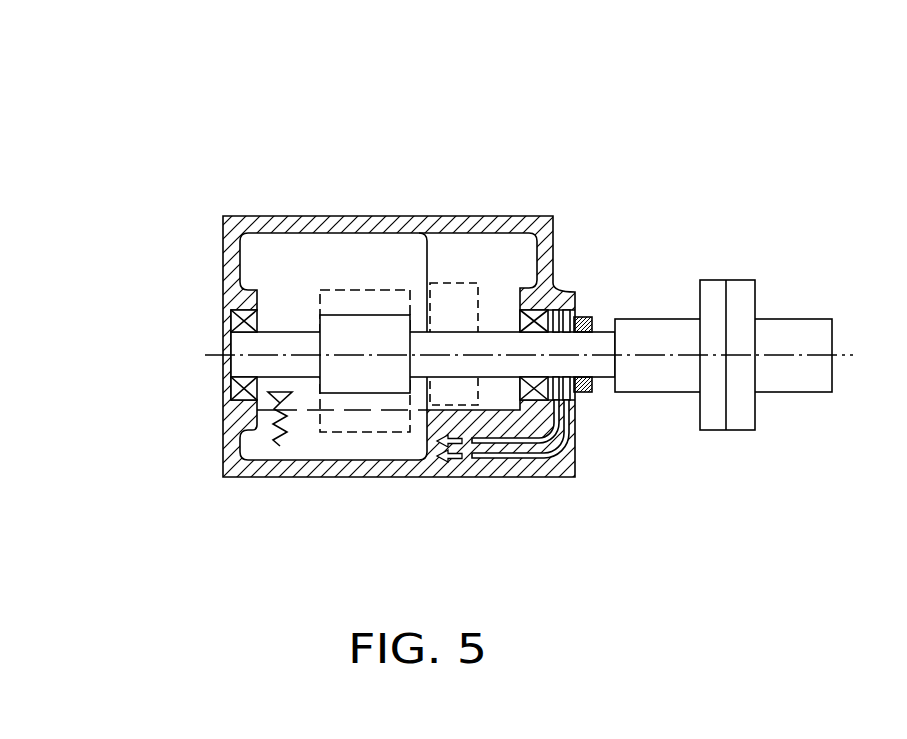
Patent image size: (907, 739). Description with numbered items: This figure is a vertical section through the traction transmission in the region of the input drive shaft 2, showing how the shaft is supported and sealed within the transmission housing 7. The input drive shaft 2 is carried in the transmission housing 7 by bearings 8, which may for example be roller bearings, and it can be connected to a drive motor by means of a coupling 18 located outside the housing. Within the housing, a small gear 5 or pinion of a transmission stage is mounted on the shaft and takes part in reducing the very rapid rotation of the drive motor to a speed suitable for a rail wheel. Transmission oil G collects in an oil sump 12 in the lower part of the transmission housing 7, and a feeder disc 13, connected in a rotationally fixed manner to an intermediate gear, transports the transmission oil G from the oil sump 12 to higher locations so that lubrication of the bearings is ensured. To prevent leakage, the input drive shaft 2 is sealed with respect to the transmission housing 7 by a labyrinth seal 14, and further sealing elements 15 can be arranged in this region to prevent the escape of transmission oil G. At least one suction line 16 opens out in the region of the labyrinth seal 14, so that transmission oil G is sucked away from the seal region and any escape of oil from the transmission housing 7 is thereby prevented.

The transmission housing 7 is at (223, 237).
The bearings 8 is at (245, 312).
The small gear 5 is at (366, 330).
The feeder disc 13 is at (460, 305).
The labyrinth seal 14 is at (578, 308).
The coupling 18 is at (770, 350).
The input drive shaft 2 is at (252, 364).
The transmission oil G is at (297, 437).
The oil sump 12 is at (336, 435).
The further sealing elements 15 is at (594, 397).
The suction line 16 is at (521, 446).